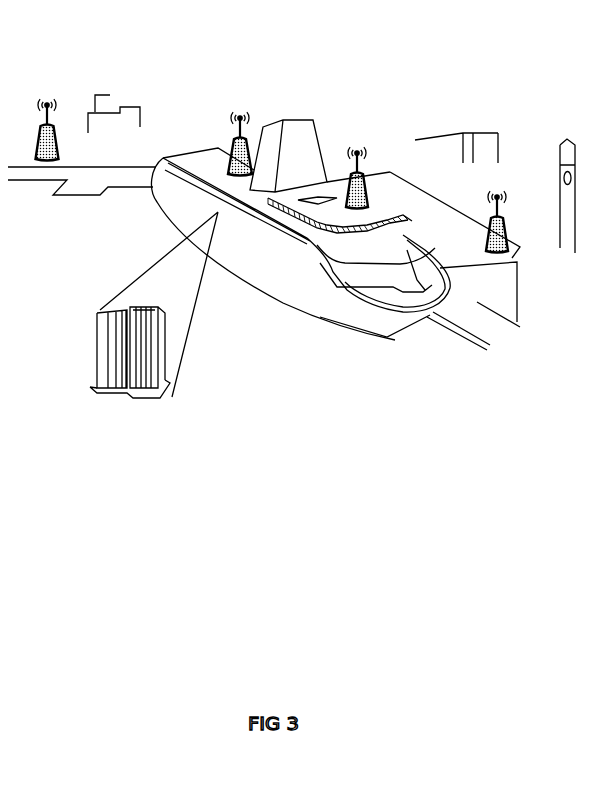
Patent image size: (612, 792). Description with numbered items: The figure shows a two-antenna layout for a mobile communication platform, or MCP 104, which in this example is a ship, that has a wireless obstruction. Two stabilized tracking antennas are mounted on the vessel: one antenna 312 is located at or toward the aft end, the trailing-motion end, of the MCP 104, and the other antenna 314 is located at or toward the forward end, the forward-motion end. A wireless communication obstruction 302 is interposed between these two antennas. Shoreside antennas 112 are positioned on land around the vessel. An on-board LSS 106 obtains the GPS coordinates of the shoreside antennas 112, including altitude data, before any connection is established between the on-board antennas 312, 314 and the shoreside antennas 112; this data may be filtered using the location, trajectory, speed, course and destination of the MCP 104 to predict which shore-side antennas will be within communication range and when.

The MCP 104 is at (387, 337).
The LSS 106 is at (158, 405).
The shoreside antenna 112 is at (47, 104).
The wireless communication obstruction 302 is at (278, 128).
The antenna 312 is at (235, 148).
The antenna 314 is at (357, 150).